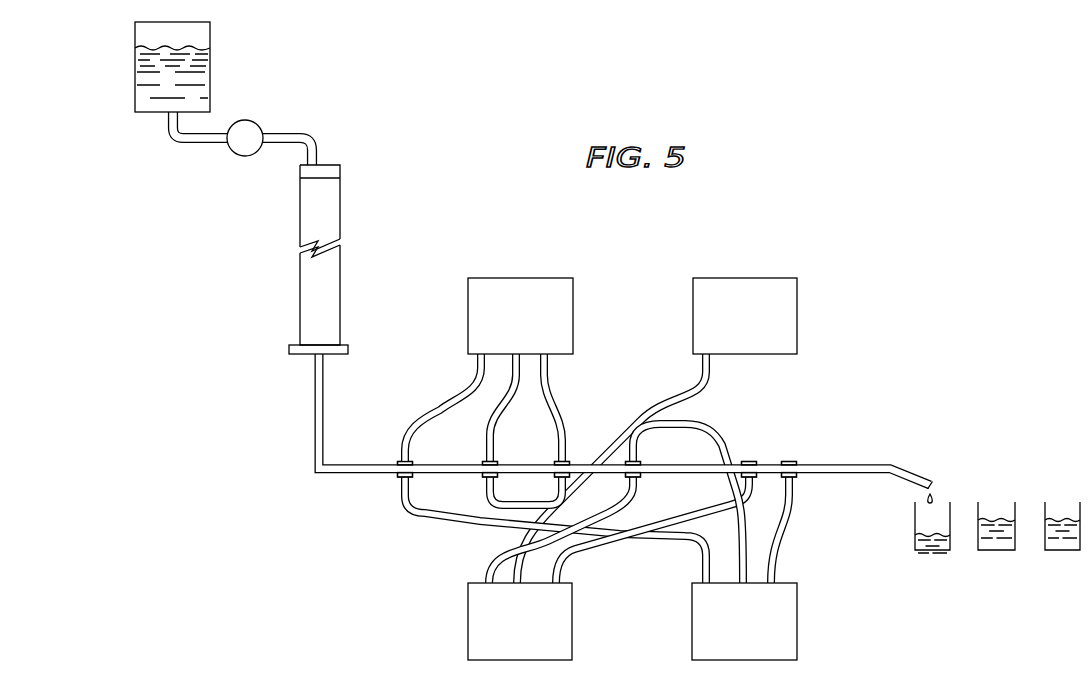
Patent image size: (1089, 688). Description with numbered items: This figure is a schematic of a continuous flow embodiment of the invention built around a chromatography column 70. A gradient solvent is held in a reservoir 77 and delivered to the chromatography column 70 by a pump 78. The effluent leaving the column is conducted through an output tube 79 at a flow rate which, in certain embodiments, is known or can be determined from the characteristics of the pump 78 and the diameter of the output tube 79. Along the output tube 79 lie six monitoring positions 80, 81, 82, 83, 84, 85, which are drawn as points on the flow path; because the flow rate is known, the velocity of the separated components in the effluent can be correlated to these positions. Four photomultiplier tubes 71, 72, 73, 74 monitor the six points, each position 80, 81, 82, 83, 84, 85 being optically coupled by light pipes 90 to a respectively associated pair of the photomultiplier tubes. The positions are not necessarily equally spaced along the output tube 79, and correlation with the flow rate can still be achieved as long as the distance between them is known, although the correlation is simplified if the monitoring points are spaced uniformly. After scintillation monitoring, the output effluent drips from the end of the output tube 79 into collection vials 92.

The chromatography column 70 is at (300, 198).
The photomultiplier tube 71 is at (486, 278).
The photomultiplier tube 72 is at (720, 278).
The photomultiplier tube 73 is at (468, 630).
The photomultiplier tube 74 is at (692, 628).
The reservoir 77 is at (135, 57).
The pump 78 is at (247, 120).
The output tube 79 is at (315, 432).
The monitoring position 80 is at (397, 478).
The monitoring position 81 is at (484, 462).
The monitoring position 82 is at (556, 462).
The monitoring position 83 is at (640, 477).
The monitoring position 84 is at (752, 462).
The monitoring position 85 is at (797, 462).
The light pipes 90 is at (450, 402).
The collection vials 92 is at (930, 552).